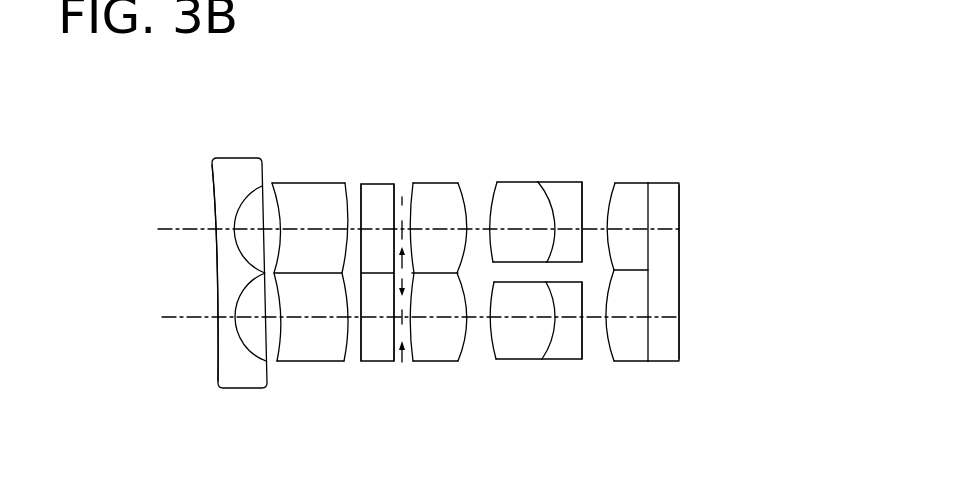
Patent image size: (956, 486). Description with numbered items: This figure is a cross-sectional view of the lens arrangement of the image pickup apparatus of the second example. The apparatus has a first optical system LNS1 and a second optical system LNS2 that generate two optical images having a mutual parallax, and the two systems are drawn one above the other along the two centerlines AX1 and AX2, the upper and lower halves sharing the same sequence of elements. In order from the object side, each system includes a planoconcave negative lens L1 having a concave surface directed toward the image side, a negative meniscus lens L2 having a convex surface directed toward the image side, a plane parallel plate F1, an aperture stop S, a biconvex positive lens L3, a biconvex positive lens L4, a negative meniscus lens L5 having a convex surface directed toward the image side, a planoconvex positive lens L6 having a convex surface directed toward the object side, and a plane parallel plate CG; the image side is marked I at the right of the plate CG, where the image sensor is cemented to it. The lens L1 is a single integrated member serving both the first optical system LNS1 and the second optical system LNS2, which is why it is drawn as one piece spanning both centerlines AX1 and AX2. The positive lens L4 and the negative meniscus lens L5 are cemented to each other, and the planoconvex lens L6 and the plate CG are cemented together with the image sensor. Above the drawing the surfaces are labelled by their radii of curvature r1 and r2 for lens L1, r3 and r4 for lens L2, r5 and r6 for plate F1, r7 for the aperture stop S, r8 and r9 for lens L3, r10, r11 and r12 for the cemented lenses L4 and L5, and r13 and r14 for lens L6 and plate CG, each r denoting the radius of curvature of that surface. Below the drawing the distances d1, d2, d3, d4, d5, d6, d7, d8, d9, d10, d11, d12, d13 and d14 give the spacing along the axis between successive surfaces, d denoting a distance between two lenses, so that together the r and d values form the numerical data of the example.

The planoconcave negative lens L1 is at (233, 228).
The negative meniscus lens L2 is at (310, 215).
The plane parallel plate F1 is at (367, 215).
The aperture stop S is at (417, 215).
The biconvex positive lens L3 is at (448, 215).
The biconvex positive lens L4 is at (528, 214).
The negative meniscus lens L5 is at (571, 214).
The planoconvex positive lens L6 is at (640, 215).
The plane parallel plate CG is at (665, 183).
The image plane I is at (681, 203).
The first optical system LNS1 is at (189, 172).
The second optical system LNS2 is at (191, 339).
The optical axis of first imaging optical system AX1 is at (177, 229).
The optical axis of second imaging optical system AX2 is at (178, 317).
The radius of curvature of lens surface r1 is at (212, 160).
The radius of curvature of lens surface r2 is at (250, 158).
The radius of curvature of lens surface r3 is at (283, 196).
The radius of curvature of lens surface r4 is at (343, 197).
The radius of curvature of lens surface r5 is at (362, 196).
The radius of curvature of lens surface r6 is at (393, 196).
The radius of curvature of lens surface r7 is at (402, 198).
The radius of curvature of lens surface r8 is at (413, 196).
The radius of curvature of lens surface r9 is at (467, 195).
The radius of curvature of lens surface r10 is at (492, 192).
The radius of curvature of lens surface r11 is at (549, 190).
The radius of curvature of lens surface r12 is at (583, 190).
The radius of curvature of lens surface r13 is at (606, 198).
The radius of curvature of lens surface r14 is at (649, 190).
The distance between two lenses d1 is at (223, 229).
The distance between two lenses d2 is at (267, 229).
The distance between two lenses d3 is at (308, 229).
The distance between two lenses d4 is at (352, 229).
The distance between two lenses d5 is at (380, 229).
The distance between two lenses d6 is at (397, 232).
The distance between two lenses d7 is at (406, 232).
The distance between two lenses d8 is at (438, 229).
The distance between two lenses d9 is at (477, 229).
The distance between two lenses d10 is at (522, 229).
The distance between two lenses d11 is at (568, 229).
The distance between two lenses d12 is at (597, 229).
The distance between two lenses d13 is at (630, 229).
The distance between two lenses d14 is at (669, 229).